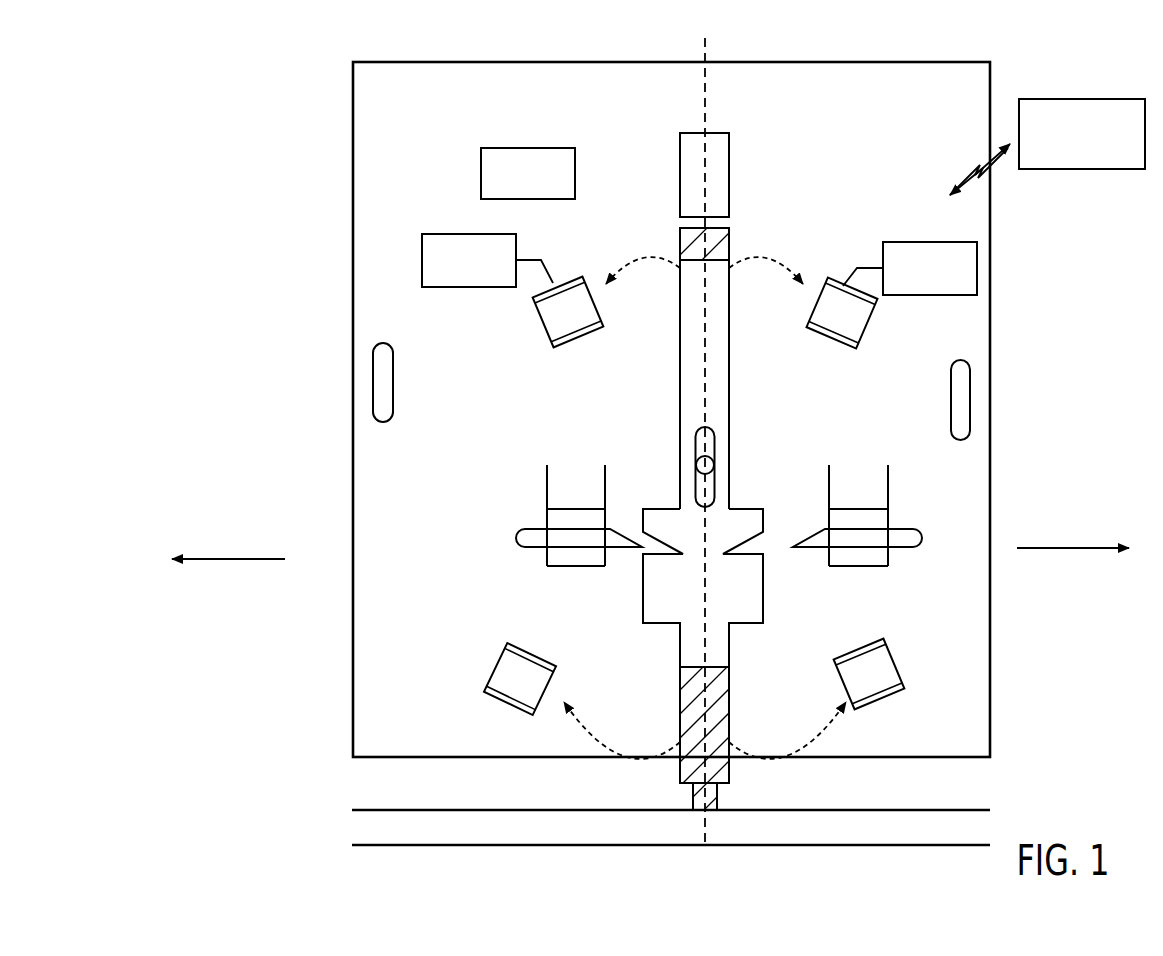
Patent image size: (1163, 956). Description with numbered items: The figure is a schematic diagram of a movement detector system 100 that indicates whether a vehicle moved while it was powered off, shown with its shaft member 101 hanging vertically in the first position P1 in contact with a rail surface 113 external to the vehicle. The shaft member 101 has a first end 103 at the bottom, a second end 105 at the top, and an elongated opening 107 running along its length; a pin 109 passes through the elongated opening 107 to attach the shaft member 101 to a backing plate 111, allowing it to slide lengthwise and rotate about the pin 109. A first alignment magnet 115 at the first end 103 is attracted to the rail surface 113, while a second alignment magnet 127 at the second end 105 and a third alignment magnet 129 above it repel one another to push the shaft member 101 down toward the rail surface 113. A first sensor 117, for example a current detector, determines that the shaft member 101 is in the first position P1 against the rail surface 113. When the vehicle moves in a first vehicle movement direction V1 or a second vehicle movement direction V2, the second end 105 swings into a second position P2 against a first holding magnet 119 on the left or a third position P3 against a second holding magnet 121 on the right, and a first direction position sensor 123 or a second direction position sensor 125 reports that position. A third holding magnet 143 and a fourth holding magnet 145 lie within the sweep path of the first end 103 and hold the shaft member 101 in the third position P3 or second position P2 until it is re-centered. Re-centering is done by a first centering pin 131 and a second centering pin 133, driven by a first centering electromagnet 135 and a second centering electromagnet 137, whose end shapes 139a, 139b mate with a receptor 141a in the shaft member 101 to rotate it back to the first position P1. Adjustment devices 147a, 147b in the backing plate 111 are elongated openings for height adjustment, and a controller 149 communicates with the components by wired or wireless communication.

The movement detector system 100 is at (295, 108).
The shaft member 101 is at (680, 380).
The first end 103 is at (693, 800).
The second end 105 is at (680, 243).
The elongated opening 107 is at (695, 440).
The pin 109 is at (696, 468).
The backing plate 111 is at (353, 186).
The rail surface 113 is at (847, 808).
The first alignment magnet 115 is at (683, 700).
The first sensor 117 is at (558, 148).
The first holding magnet 119 is at (563, 283).
The second holding magnet 121 is at (820, 339).
The first direction position sensor 123 is at (422, 262).
The second direction position sensor 125 is at (977, 268).
The second alignment magnet 127 is at (729, 243).
The third alignment magnet 129 is at (729, 178).
The first centering pin 131 is at (529, 529).
The second centering pin 133 is at (922, 538).
The first centering electromagnet 135 is at (547, 556).
The second centering electromagnet 137 is at (888, 556).
The end shape 139a is at (643, 550).
The end shape 139b is at (793, 548).
The receptor 141a is at (660, 625).
The third holding magnet 143 is at (535, 655).
The fourth holding magnet 145 is at (853, 643).
The adjustment device 147a is at (373, 380).
The adjustment device 147b is at (973, 393).
The controller 149 is at (1076, 169).
The first position P1 is at (703, 88).
The second position P2 is at (635, 266).
The third position P3 is at (767, 265).
The first vehicle movement direction V1 is at (256, 558).
The second vehicle movement direction V2 is at (1066, 548).